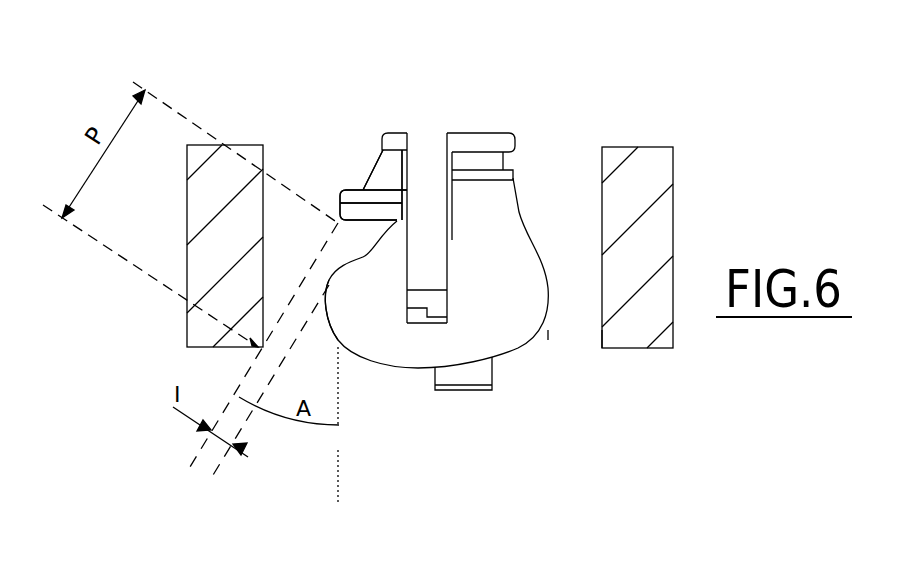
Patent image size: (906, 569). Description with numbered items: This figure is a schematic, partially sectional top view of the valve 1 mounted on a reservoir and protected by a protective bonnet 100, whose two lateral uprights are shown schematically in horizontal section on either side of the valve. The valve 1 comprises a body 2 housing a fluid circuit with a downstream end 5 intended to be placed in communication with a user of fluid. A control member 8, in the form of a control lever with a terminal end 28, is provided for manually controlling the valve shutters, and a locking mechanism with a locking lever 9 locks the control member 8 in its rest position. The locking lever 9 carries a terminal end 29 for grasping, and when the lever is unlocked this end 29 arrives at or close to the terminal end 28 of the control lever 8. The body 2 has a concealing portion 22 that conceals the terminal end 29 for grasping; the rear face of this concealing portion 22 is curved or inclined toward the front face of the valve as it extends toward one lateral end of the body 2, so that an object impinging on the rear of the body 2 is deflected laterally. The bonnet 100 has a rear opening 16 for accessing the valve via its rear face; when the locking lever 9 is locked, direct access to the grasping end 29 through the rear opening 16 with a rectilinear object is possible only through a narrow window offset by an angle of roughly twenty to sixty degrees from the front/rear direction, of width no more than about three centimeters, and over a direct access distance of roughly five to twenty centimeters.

The valve 1 is at (562, 162).
The body 2 is at (520, 333).
The downstream end 5 is at (471, 394).
The control member 8 is at (440, 147).
The locking lever 9 is at (363, 187).
The terminal end for grasping 29 is at (363, 187).
The rear opening 16 is at (573, 340).
The concealing portion 22 is at (353, 360).
The terminal end of the control lever 28 is at (422, 128).
The protective bonnet 100 is at (188, 235).